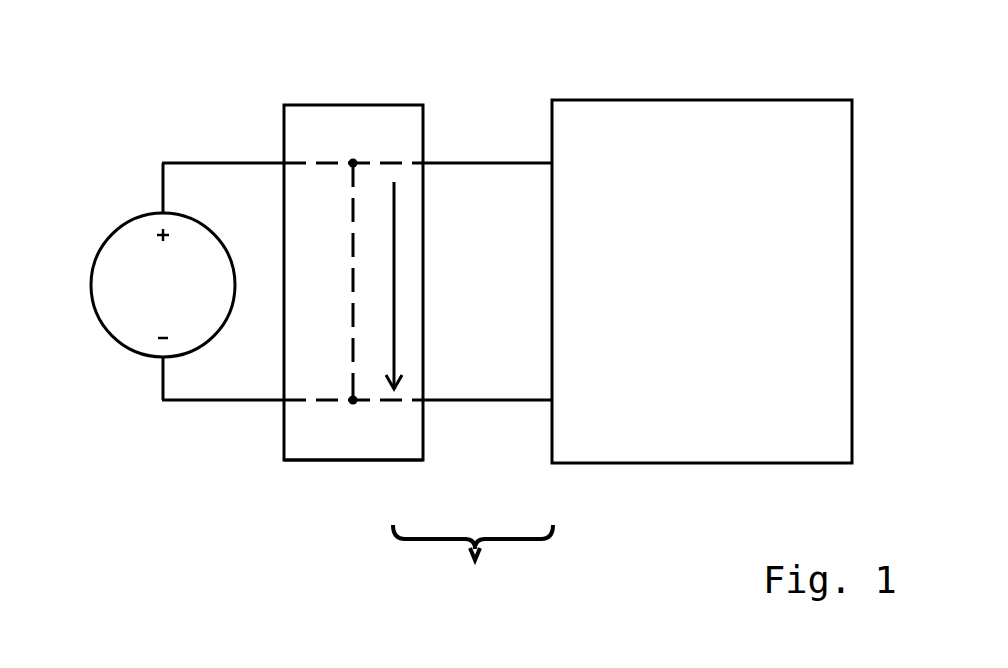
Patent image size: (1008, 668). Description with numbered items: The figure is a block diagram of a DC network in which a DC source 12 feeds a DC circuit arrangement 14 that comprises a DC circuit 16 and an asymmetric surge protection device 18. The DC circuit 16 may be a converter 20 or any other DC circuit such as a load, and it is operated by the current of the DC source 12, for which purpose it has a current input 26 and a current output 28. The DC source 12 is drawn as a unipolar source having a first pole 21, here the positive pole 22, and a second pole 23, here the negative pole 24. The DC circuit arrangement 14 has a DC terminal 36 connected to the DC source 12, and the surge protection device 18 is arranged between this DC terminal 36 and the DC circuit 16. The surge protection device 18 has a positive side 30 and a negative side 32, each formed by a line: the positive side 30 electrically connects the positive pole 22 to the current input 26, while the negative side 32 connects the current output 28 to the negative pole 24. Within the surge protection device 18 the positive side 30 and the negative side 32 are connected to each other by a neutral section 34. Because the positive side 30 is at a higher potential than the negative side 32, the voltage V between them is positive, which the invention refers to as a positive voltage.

The DC source 12 is at (92, 278).
The DC circuit arrangement 14 is at (473, 558).
The DC circuit 16 is at (655, 311).
The asymmetric surge protection device 18 is at (385, 460).
The converter 20 is at (550, 463).
The first pole 21 is at (96, 188).
The positive pole 22 is at (154, 205).
The second pole 23 is at (157, 386).
The negative pole 24 is at (151, 367).
The current input 26 is at (546, 150).
The current output 28 is at (546, 408).
The positive side 30 is at (349, 158).
The negative side 32 is at (312, 422).
The neutral section 34 is at (348, 313).
The DC terminal 36 is at (247, 152).
The voltage V is at (393, 380).